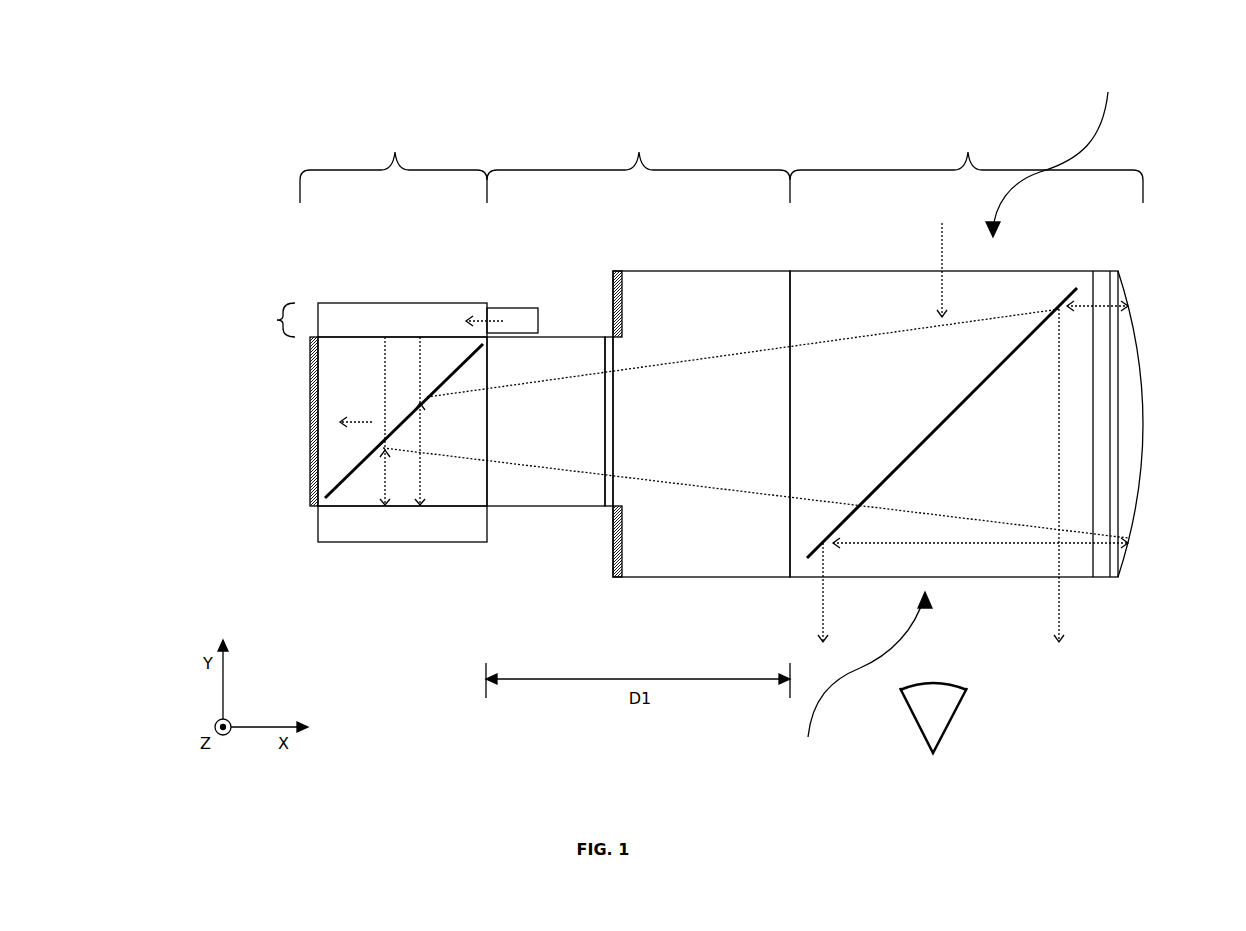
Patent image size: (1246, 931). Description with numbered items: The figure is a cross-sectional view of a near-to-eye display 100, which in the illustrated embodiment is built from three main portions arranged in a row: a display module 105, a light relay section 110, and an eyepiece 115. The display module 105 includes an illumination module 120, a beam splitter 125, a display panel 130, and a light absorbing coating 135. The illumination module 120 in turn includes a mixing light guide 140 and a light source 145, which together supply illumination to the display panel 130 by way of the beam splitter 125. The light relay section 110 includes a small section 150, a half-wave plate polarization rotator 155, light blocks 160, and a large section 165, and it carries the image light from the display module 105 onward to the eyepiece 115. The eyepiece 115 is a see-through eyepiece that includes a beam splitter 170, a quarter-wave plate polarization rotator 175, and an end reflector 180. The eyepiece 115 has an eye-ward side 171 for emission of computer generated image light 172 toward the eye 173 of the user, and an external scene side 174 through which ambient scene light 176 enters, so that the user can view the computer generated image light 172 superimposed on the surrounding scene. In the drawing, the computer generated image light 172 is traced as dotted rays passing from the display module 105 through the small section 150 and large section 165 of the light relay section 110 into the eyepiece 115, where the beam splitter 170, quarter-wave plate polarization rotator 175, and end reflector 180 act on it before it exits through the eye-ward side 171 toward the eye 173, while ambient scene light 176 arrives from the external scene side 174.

The near-to-eye display 100 is at (200, 82).
The display module 105 is at (393, 145).
The light relay section 110 is at (638, 150).
The eyepiece 115 is at (966, 150).
The illumination module 120 is at (223, 340).
The beam splitter 125 is at (402, 421).
The display panel 130 is at (402, 524).
The light absorbing coating 135 is at (312, 445).
The mixing light guide 140 is at (358, 303).
The light source 145 is at (507, 308).
The small section 150 is at (546, 421).
The half-wave plate polarization rotator 155 is at (605, 498).
The light blocks 160 is at (613, 282).
The large section 165 is at (701, 424).
The beam splitter 170 is at (954, 424).
The eye-ward side 171 is at (847, 693).
The computer generated image light 172 is at (700, 362).
The eye 173 is at (950, 718).
The external scene side 174 is at (1083, 137).
The quarter-wave plate polarization rotator 175 is at (1118, 271).
The ambient scene light 176 is at (942, 260).
The end reflector 180 is at (1143, 441).